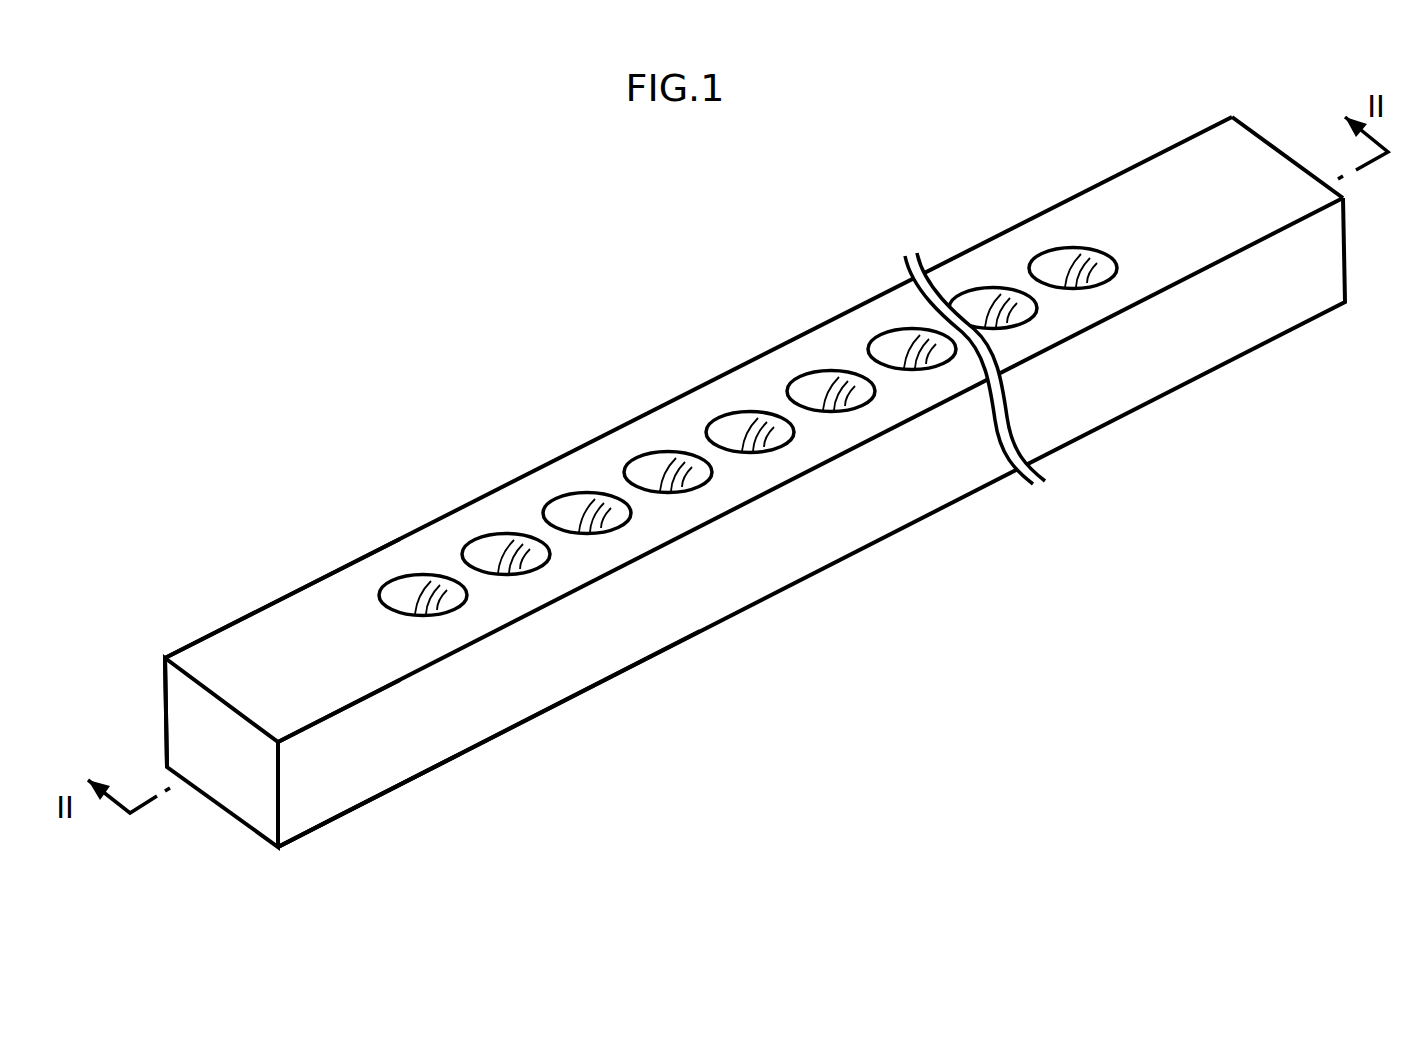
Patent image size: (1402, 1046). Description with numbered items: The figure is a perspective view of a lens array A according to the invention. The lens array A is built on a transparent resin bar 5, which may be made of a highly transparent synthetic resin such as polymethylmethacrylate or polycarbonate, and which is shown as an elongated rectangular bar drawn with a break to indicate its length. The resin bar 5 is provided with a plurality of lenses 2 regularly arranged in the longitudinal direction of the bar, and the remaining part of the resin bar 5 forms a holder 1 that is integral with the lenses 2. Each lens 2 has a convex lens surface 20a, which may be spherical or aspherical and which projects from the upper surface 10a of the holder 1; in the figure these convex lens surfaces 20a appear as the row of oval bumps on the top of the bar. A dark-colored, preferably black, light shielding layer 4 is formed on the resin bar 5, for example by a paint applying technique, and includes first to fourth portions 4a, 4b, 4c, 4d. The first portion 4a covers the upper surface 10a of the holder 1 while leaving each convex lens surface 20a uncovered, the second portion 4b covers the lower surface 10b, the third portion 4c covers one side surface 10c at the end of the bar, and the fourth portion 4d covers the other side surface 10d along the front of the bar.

The lens array A is at (358, 421).
The holder 1 is at (437, 542).
The lens 2 is at (492, 550).
The convex lens surface 20a is at (610, 502).
The light shielding layer 4 is at (718, 502).
The first portion 4a is at (290, 618).
The second portion 4b is at (370, 800).
The third portion 4c is at (165, 660).
The fourth portion 4d is at (487, 715).
The resin bar 5 is at (257, 635).
The upper surface 10a is at (332, 592).
The lower surface 10b is at (417, 778).
The side surface 10c is at (163, 703).
The side surface 10d is at (297, 798).